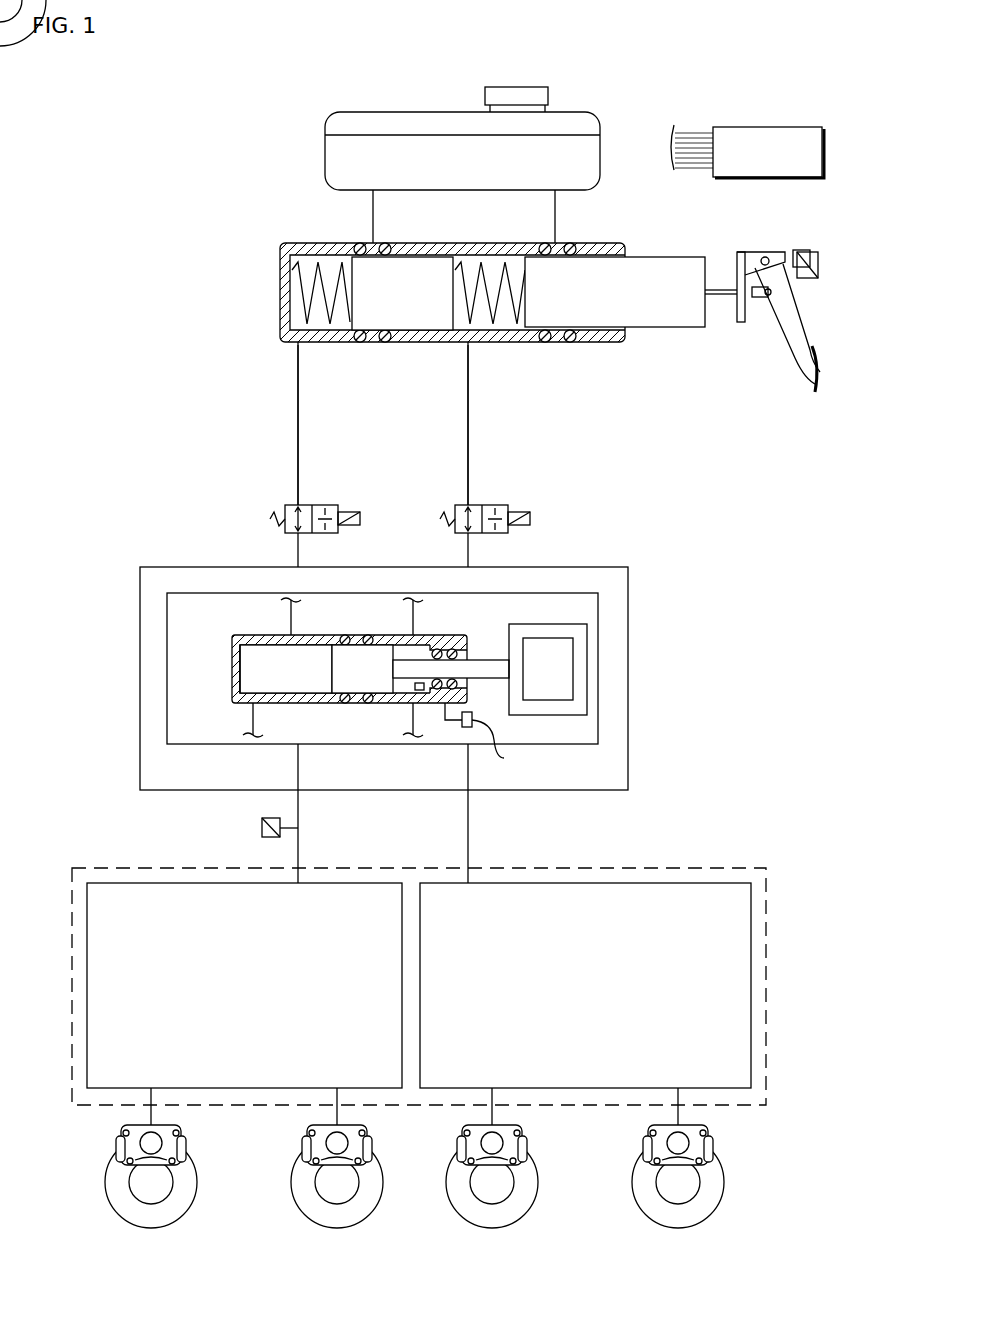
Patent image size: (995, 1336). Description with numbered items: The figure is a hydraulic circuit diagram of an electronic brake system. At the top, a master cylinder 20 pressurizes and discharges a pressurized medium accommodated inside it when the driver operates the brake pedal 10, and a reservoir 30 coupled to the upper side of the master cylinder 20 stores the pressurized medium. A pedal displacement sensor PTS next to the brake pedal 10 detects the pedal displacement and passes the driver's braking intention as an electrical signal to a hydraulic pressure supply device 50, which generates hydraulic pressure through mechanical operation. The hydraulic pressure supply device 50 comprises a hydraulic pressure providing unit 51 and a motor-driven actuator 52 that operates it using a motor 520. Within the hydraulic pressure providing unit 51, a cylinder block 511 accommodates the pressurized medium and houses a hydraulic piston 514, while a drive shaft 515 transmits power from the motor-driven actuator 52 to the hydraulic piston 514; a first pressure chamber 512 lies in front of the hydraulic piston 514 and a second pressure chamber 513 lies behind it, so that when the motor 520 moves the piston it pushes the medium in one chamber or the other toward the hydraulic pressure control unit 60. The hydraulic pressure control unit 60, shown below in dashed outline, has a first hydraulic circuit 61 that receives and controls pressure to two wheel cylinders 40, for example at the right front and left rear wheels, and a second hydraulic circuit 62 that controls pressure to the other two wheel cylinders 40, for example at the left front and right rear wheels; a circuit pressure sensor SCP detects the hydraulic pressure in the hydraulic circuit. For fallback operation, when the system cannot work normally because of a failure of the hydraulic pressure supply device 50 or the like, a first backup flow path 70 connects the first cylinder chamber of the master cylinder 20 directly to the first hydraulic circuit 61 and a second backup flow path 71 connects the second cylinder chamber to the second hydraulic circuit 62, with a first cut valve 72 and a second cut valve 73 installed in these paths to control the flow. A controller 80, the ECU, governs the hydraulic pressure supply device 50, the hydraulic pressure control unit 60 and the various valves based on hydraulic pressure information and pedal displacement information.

The brake pedal 10 is at (783, 316).
The master cylinder 20 is at (283, 265).
The reservoir 30 is at (325, 128).
The wheel cylinder 40 is at (709, 1140).
The hydraulic pressure supply device 50 is at (605, 668).
The hydraulic pressure providing unit 51 is at (230, 632).
The cylinder block 511 is at (240, 662).
The first pressure chamber 512 is at (253, 668).
The second pressure chamber 513 is at (420, 692).
The hydraulic piston 514 is at (358, 652).
The drive shaft 515 is at (481, 663).
The motor-driven actuator 52 is at (592, 627).
The motor 520 is at (573, 690).
The hydraulic pressure control unit 60 is at (772, 865).
The first hydraulic circuit 61 is at (671, 882).
The second hydraulic circuit 62 is at (129, 882).
The first backup flow path 70 is at (468, 373).
The second backup flow path 71 is at (298, 373).
The first cut valve 72 is at (532, 520).
The second cut valve 73 is at (362, 520).
The controller 80 is at (768, 125).
The pedal displacement sensor PTS is at (815, 254).
The circuit pressure sensor SCP is at (262, 828).